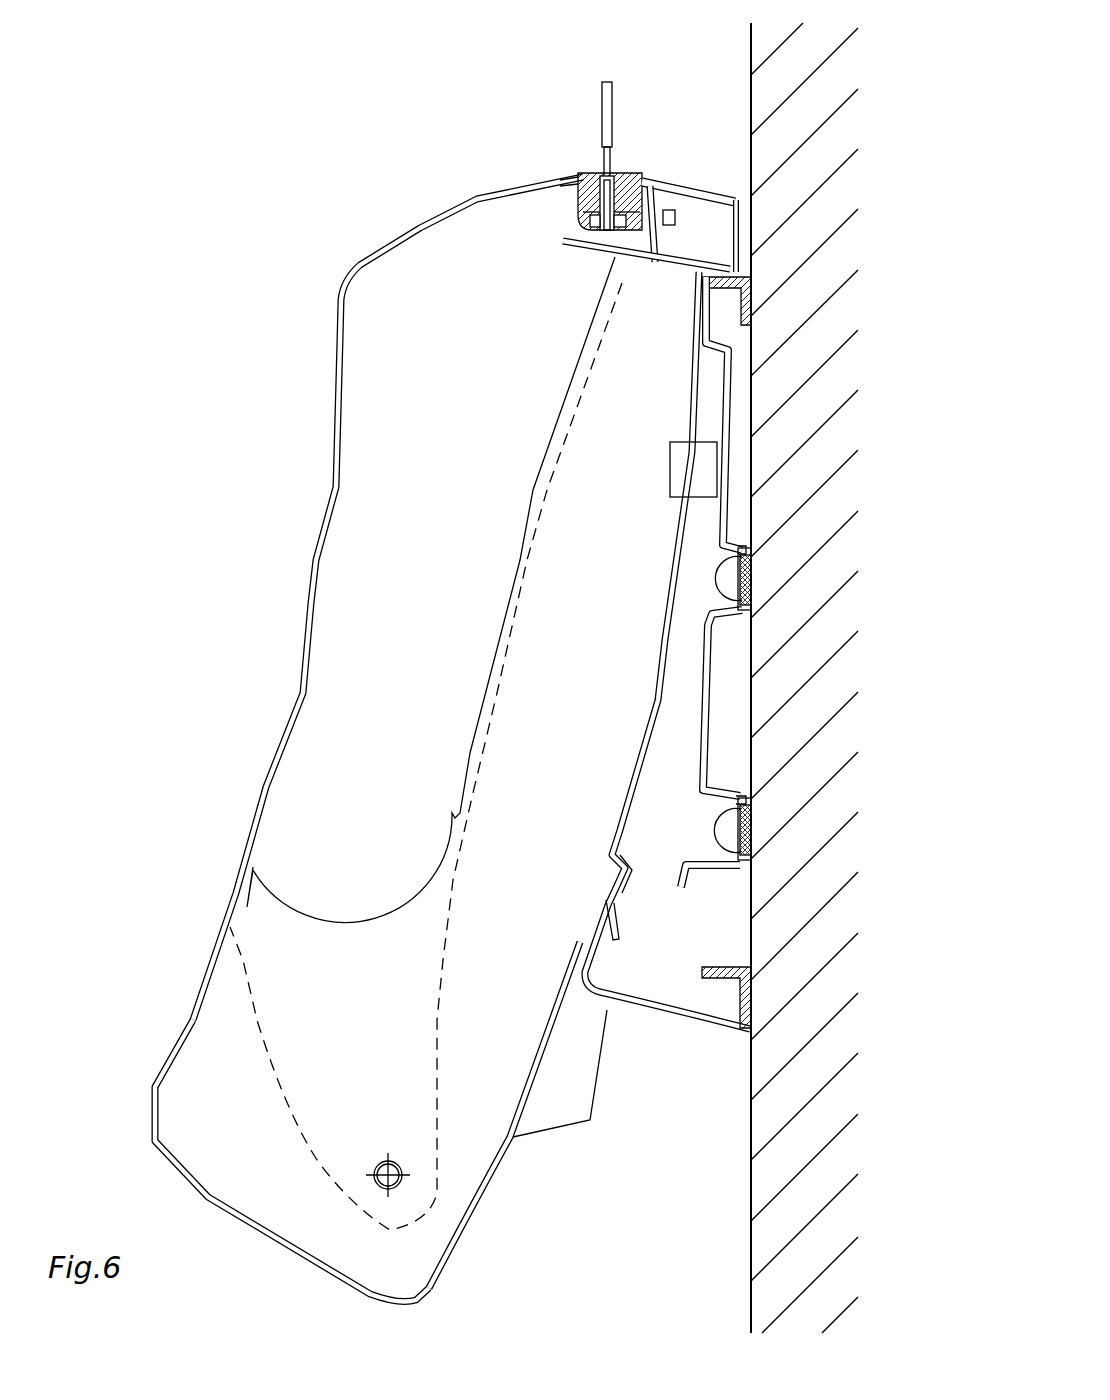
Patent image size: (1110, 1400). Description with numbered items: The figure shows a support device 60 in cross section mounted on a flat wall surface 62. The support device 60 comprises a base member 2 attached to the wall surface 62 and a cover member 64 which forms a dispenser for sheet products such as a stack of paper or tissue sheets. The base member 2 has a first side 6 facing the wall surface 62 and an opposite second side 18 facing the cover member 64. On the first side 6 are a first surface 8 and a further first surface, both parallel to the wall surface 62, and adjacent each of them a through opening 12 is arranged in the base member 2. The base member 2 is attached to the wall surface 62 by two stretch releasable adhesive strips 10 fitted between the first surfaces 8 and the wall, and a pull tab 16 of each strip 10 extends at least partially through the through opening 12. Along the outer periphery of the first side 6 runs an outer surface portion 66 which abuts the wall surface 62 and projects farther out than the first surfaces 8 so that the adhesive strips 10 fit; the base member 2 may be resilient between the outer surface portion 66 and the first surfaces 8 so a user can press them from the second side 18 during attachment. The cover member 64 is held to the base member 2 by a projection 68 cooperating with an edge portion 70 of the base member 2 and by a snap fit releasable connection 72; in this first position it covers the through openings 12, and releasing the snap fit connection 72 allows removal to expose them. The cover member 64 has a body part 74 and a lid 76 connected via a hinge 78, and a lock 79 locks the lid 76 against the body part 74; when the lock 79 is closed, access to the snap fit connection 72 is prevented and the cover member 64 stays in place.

The base member 2 is at (731, 709).
The first side 6 is at (735, 400).
The first surface 8 is at (742, 548).
The stretch releasable adhesive strip 10 is at (745, 585).
The through opening 12 is at (752, 573).
The pull tab 16 is at (730, 584).
The second side 18 is at (668, 718).
The support device 60 is at (240, 134).
The wall surface 62 is at (745, 86).
The cover member 64 is at (512, 1180).
The outer surface portion 66 is at (756, 295).
The projection 68 is at (614, 912).
The edge portion 70 is at (612, 876).
The snap fit releasable connection 72 is at (655, 456).
The body part 74 is at (452, 1254).
The lid 76 is at (311, 600).
The hinge 78 is at (402, 1183).
The lock 79 is at (568, 137).